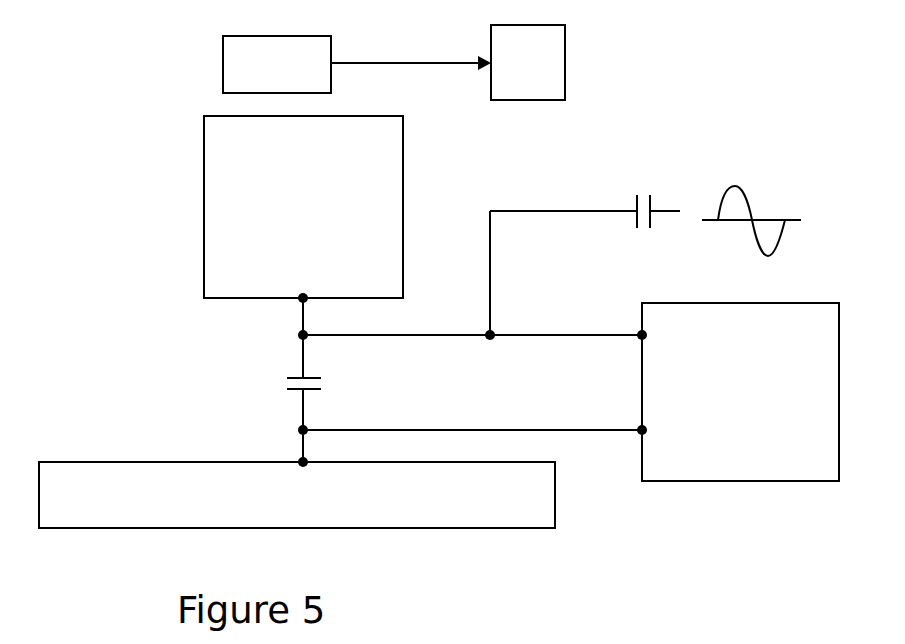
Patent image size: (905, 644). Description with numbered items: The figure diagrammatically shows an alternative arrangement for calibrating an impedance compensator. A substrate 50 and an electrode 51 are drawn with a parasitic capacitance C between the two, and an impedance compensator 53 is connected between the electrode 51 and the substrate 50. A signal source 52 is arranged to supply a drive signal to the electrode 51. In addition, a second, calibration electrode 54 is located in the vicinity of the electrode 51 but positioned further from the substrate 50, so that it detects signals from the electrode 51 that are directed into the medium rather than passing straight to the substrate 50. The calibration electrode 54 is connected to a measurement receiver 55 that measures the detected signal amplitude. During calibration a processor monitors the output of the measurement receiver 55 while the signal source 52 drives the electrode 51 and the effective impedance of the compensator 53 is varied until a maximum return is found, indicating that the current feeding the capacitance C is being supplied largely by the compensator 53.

The substrate 50 is at (541, 528).
The electrode 51 is at (204, 207).
The signal source 52 is at (763, 208).
The impedance compensator 53 is at (768, 481).
The calibration electrode 54 is at (223, 57).
The measurement receiver 55 is at (565, 72).
The parasitic capacitance C is at (325, 382).